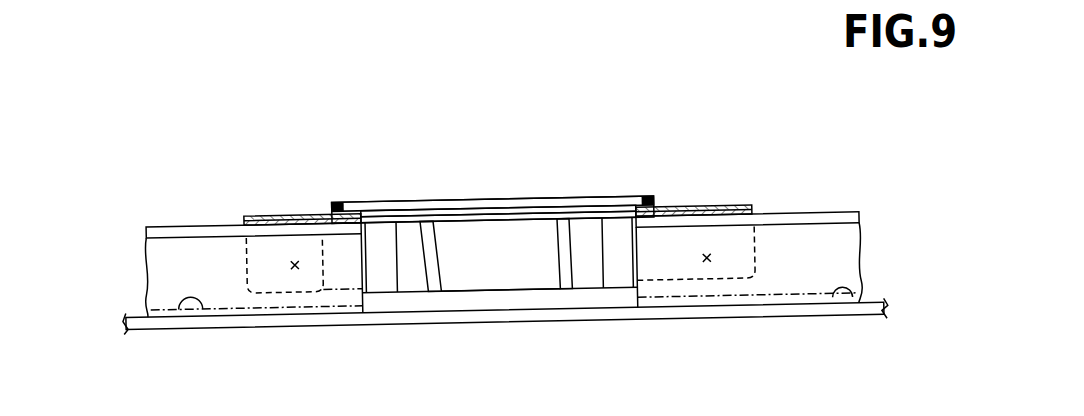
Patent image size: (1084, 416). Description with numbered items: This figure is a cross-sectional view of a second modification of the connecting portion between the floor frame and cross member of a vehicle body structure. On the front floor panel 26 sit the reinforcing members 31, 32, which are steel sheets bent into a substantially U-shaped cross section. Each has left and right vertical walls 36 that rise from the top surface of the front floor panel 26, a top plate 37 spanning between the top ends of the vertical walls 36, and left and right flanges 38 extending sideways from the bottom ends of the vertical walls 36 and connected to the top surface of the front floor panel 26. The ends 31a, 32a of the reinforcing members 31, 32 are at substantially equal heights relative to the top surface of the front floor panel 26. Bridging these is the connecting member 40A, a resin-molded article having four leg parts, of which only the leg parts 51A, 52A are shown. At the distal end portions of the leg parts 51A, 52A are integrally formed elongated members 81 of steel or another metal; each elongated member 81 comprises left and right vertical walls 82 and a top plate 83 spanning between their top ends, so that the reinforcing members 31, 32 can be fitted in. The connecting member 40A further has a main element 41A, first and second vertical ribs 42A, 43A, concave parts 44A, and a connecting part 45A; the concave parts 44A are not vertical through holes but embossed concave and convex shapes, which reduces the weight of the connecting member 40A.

The front floor panel 26 is at (143, 323).
The reinforcing member 31 is at (157, 219).
The end of reinforcing member 31a is at (353, 273).
The reinforcing member 32 is at (852, 219).
The end of reinforcing member 32a is at (667, 269).
The vertical wall 36 is at (245, 308).
The top plate 37 is at (200, 221).
The flange 38 is at (197, 312).
The connecting member 40A is at (569, 193).
The main element 41A is at (595, 184).
The first vertical rib 42A is at (502, 277).
The second vertical rib 43A is at (442, 262).
The concave part 44A is at (456, 198).
The connecting part 45A is at (499, 198).
The leg part 51A is at (380, 195).
The leg part 52A is at (622, 194).
The elongated member 81 is at (250, 86).
The vertical wall 82 is at (323, 219).
The top plate 83 is at (273, 211).